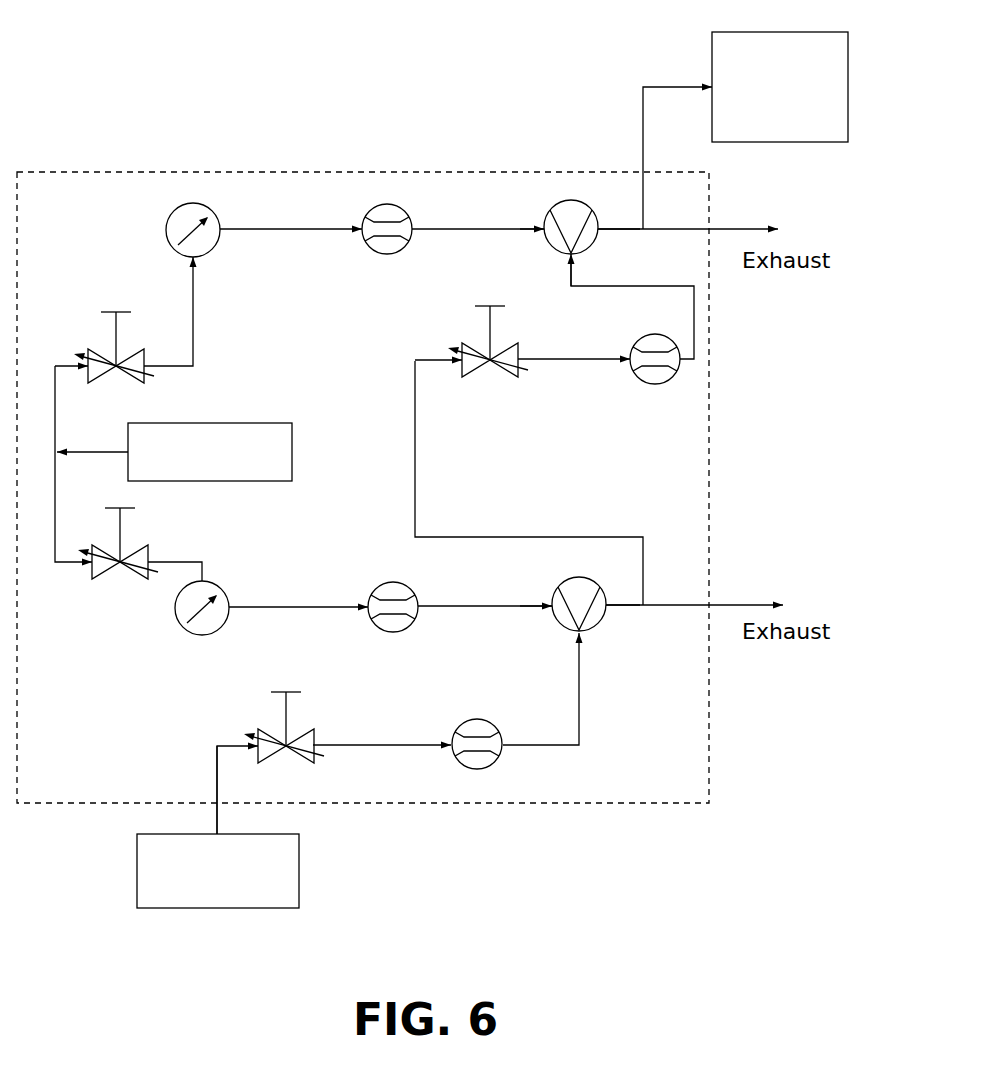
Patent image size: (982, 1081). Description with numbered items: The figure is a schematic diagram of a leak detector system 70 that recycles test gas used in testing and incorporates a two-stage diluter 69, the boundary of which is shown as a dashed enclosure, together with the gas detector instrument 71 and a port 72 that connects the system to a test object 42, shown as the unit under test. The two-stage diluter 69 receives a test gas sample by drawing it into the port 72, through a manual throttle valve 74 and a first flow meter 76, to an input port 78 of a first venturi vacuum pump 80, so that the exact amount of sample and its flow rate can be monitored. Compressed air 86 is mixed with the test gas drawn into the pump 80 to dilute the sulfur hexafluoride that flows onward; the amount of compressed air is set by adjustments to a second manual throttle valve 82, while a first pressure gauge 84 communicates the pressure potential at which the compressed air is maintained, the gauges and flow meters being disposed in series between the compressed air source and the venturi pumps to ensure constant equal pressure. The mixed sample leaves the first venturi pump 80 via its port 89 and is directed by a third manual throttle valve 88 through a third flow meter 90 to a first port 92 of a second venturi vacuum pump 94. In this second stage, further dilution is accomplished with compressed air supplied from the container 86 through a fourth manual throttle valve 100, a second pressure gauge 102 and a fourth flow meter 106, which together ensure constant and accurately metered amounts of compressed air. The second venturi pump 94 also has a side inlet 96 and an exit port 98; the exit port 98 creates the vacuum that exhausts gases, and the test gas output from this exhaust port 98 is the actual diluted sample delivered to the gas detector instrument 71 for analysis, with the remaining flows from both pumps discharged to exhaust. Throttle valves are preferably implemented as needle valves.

The leak detector system 70 is at (110, 50).
The two-stage diluter 69 is at (320, 172).
The gas detector instrument 71 is at (712, 32).
The second pressure gauge 102 is at (166, 211).
The fourth flow meter 106 is at (370, 214).
The second venturi vacuum pump 94 is at (549, 210).
The mixing chamber inlet 96 is at (544, 229).
The exit port 98 is at (600, 229).
The first port 92 is at (571, 278).
The fourth manual throttle valve 100 is at (95, 348).
The compressed air 86 is at (283, 423).
The third manual throttle valve 88 is at (486, 377).
The third flow meter 90 is at (637, 380).
The second manual throttle valve 82 is at (93, 580).
The first pressure gauge 84 is at (184, 633).
The first venturi vacuum pump 80 is at (566, 582).
The port 89 is at (605, 612).
The input port 78 is at (578, 650).
The manual throttle valve 74 is at (306, 730).
The first flow meter 76 is at (458, 726).
The port 72 is at (217, 780).
The test object 42 is at (299, 860).